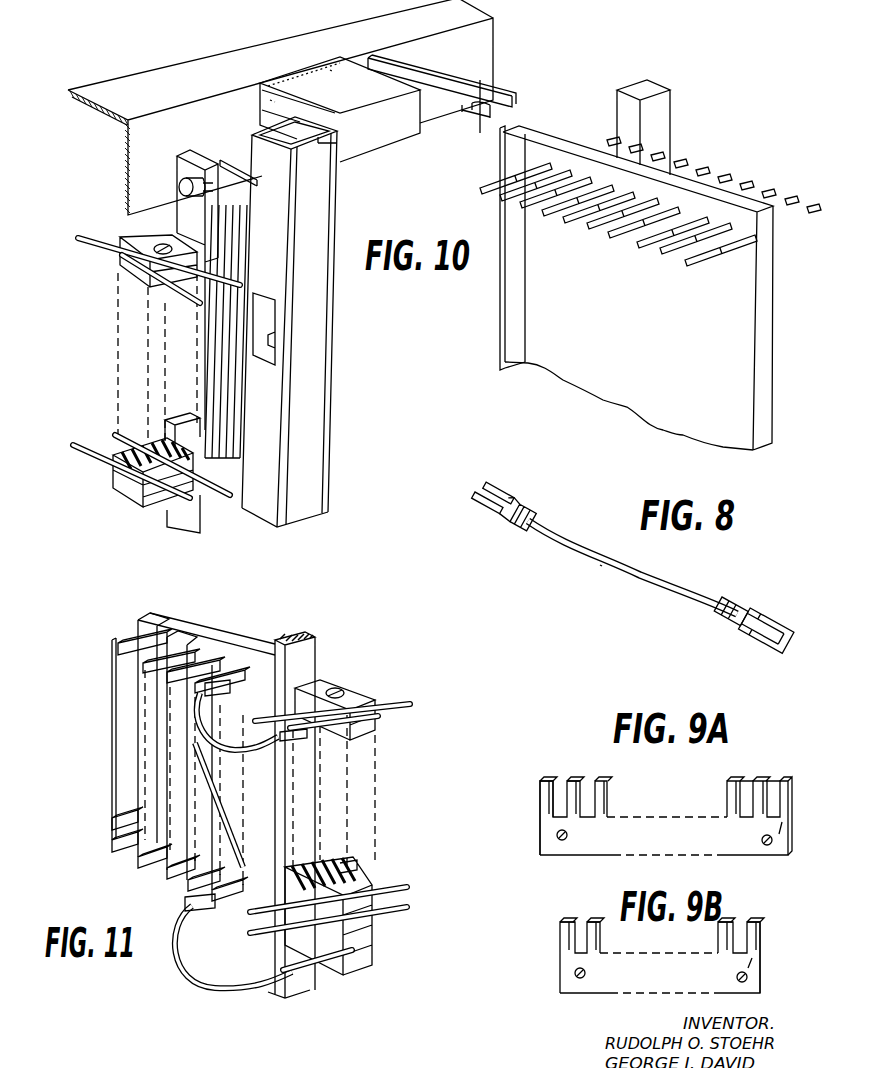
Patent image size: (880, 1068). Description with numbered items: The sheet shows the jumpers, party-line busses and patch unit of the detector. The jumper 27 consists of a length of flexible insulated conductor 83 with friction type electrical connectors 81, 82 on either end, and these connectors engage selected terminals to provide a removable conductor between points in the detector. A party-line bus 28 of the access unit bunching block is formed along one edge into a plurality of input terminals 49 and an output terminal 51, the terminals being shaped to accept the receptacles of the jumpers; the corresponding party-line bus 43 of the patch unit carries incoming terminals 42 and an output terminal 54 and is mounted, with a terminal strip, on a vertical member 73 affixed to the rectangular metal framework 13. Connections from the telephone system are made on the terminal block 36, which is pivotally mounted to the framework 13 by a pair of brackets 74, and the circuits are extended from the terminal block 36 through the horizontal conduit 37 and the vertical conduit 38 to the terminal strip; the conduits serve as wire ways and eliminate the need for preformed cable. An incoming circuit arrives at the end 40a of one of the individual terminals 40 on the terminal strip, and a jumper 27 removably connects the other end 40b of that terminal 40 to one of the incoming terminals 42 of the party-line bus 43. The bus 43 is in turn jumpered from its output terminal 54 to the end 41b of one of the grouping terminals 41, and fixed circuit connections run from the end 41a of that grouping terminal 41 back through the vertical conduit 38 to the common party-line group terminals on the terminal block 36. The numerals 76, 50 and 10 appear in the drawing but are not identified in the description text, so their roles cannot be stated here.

In FIG. 10, the rectangular metal framework 13 is at (296, 40).
In FIG. 10, the vertical member 73 is at (192, 157).
In FIG. 11, the vertical member 73 is at (315, 640).
In FIG. 10, the bracket 74 is at (498, 98).
In FIG. 10, the support block 76 is at (652, 86).
In FIG. 10, the horizontal conduit 37 is at (387, 143).
In FIG. 10, the vertical conduit 38 is at (322, 397).
In FIG. 10, the terminal block 36 is at (763, 314).
In FIG. 11, the terminal 40 is at (424, 682).
In FIG. 10, the end of terminal 40a is at (173, 288).
In FIG. 11, the end of terminal 40a is at (401, 700).
In FIG. 10, the end of terminal 40b is at (97, 211).
In FIG. 11, the end of terminal 40b is at (330, 725).
In FIG. 11, the grouping terminal 41 is at (421, 843).
In FIG. 10, the end of grouping terminal 41a is at (225, 500).
In FIG. 11, the end of grouping terminal 41a is at (392, 893).
In FIG. 10, the end of grouping terminal 41b is at (99, 457).
In FIG. 11, the end of grouping terminal 41b is at (320, 963).
In FIG. 8, the friction type electrical connector 82 is at (503, 491).
In FIG. 8, the flexible insulated conductor 83 is at (632, 549).
In FIG. 8, the friction type electrical connector 81 is at (786, 625).
In FIG. 8, the jumper 27 is at (643, 615).
In FIG. 11, the jumper 27 is at (202, 982).
In FIG. 9A, the output terminal 51 is at (549, 780).
In FIG. 9A, the input terminal 49 is at (598, 780).
In FIG. 9A, the mounting hole 50 is at (560, 830).
In FIG. 9A, the party-line bus 28 is at (671, 844).
In FIG. 9B, the output terminal 54 is at (566, 921).
In FIG. 11, the output terminal 54 is at (200, 872).
In FIG. 9B, the incoming terminal 42 is at (592, 921).
In FIG. 11, the incoming terminal 42 is at (110, 745).
In FIG. 9B, the mounting hole 10 is at (577, 970).
In FIG. 9B, the party-line bus 43 is at (665, 979).